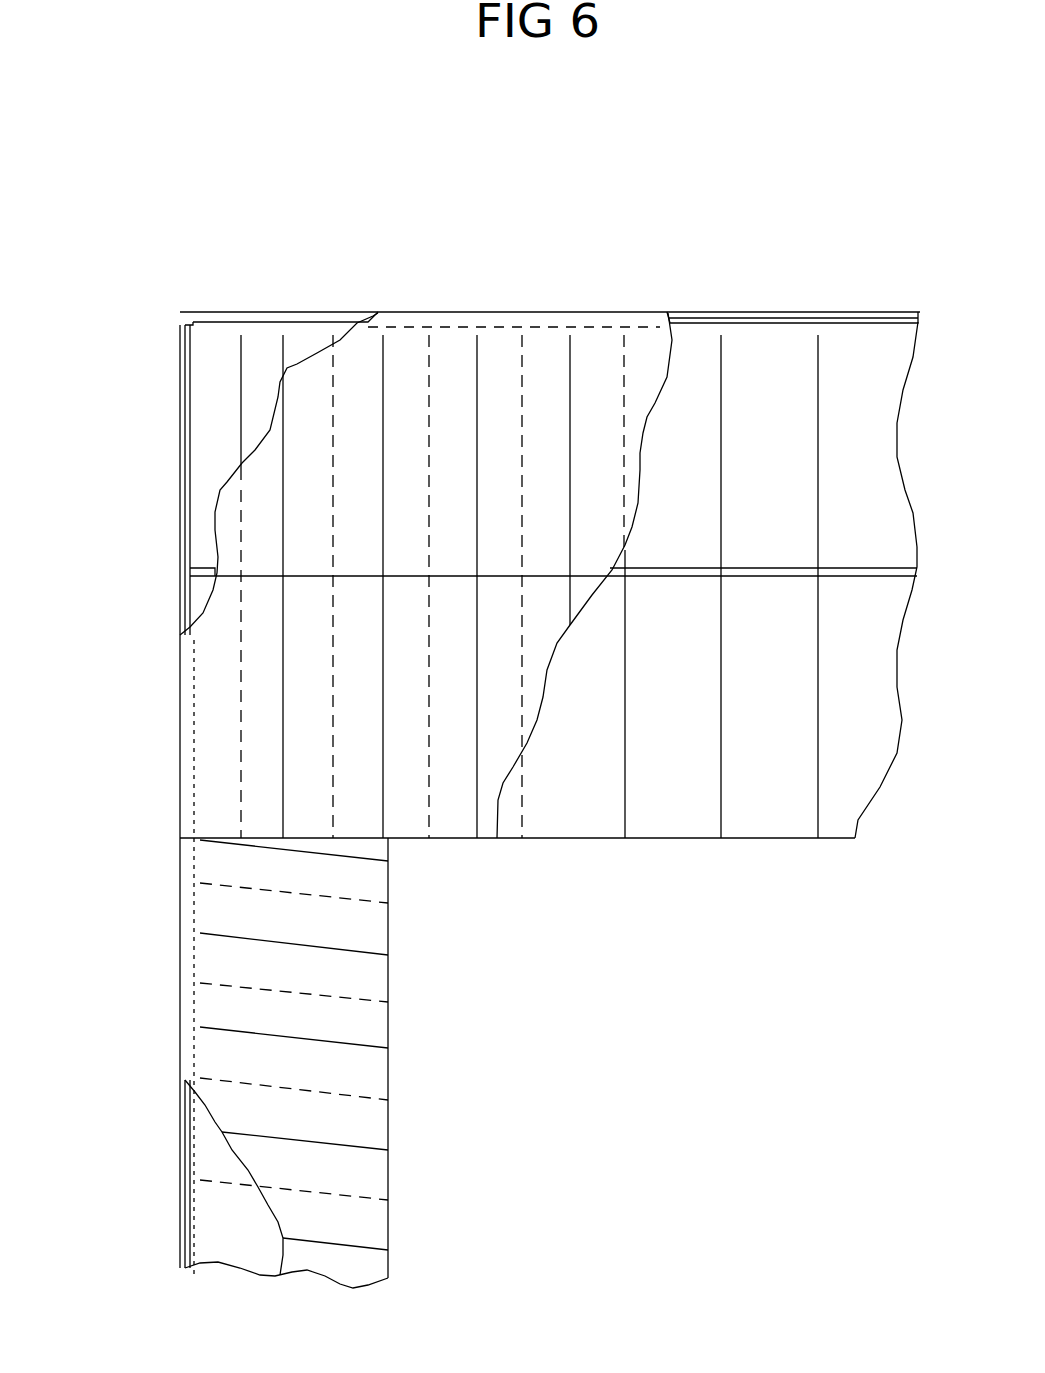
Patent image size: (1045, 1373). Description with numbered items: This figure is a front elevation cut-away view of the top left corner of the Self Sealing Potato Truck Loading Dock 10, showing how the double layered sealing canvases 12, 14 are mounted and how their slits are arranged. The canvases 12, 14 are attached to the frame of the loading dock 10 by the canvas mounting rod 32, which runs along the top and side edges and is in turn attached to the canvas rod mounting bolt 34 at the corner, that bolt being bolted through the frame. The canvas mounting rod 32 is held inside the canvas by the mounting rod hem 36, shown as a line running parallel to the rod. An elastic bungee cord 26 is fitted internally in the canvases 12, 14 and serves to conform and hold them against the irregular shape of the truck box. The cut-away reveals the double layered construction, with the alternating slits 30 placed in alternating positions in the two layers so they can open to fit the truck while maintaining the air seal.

The Self Sealing Potato Truck Loading Dock 10 is at (435, 310).
The double layered sealing canvas 12 is at (604, 482).
The double layered sealing canvas 14 is at (262, 916).
The elastic bungee cord 26 is at (205, 567).
The double layered sealing canvas alternating slits 30 is at (477, 750).
The canvas mounting rod 32 is at (783, 311).
The canvas rod mounting bolt 34 is at (178, 320).
The mounting rod hem 36 is at (582, 322).